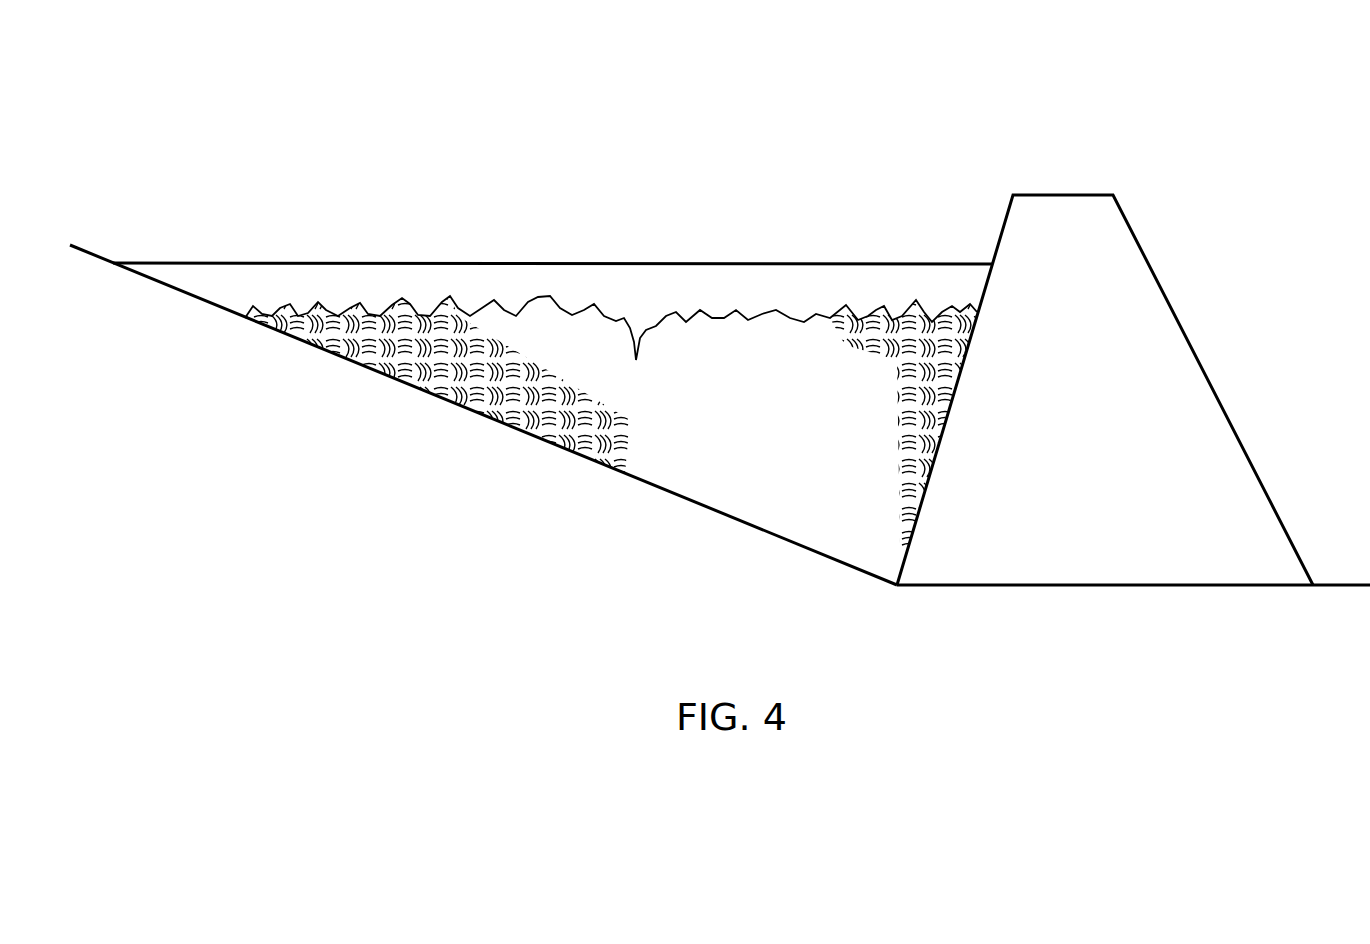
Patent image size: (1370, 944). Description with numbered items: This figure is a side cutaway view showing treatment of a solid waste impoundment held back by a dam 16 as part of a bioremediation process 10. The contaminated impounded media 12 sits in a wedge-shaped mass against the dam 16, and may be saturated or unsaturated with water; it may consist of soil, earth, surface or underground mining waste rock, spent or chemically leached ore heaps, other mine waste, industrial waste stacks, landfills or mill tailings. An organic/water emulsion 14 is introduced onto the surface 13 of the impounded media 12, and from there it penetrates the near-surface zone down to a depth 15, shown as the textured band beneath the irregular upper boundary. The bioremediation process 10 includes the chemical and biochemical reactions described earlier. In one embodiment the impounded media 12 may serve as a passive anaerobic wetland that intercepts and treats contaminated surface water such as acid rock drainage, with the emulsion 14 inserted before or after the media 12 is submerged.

The bioremediation process 10 is at (942, 153).
The impounded media 12 is at (772, 498).
The surface 13 is at (337, 263).
The organic/water emulsion 14 is at (455, 287).
The depth 15 is at (645, 322).
The dam 16 is at (1200, 400).